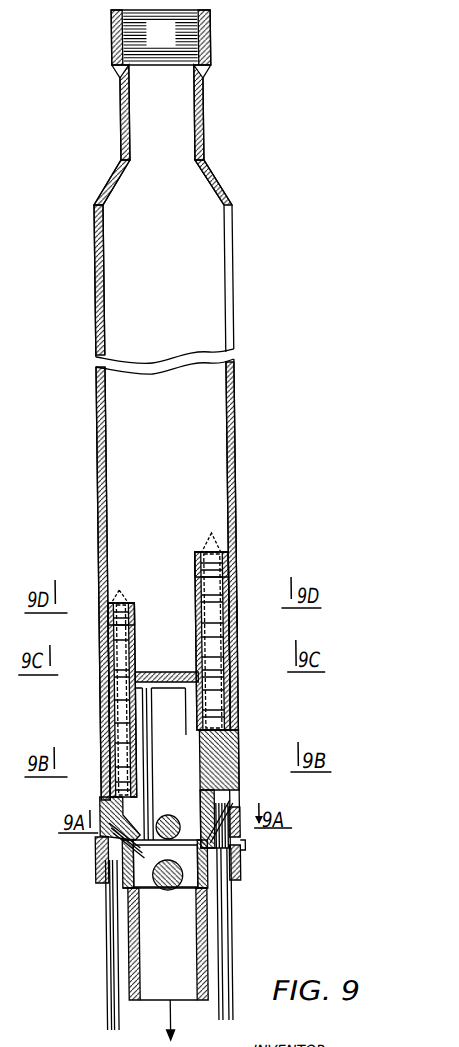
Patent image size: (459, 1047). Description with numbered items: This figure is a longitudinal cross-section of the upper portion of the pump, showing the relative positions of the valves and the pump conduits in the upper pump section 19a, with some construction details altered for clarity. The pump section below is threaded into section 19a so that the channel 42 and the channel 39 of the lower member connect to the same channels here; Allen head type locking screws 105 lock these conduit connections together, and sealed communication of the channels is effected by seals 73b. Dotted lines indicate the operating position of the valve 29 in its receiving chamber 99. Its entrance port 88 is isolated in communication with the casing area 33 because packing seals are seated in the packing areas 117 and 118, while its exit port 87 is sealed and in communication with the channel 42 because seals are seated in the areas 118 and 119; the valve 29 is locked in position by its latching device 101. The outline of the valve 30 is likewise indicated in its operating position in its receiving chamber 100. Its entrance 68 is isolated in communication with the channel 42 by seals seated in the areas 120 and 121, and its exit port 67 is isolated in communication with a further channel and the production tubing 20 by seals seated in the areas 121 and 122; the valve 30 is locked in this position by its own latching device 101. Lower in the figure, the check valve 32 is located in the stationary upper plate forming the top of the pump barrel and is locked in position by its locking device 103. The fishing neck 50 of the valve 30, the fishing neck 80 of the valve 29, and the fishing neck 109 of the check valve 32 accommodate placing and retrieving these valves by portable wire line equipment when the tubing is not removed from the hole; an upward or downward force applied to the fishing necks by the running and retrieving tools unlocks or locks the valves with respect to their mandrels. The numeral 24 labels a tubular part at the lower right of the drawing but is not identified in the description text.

The production tubing 20 is at (172, 47).
The section of pump 19a is at (262, 431).
The casing area 33 is at (292, 493).
The fishing neck 50 is at (204, 537).
The fishing neck 80 is at (114, 598).
The latching device 101 is at (196, 567).
The seal area 122 is at (215, 590).
The exit port 67 is at (191, 607).
The valve 30 is at (229, 613).
The seal area 119 is at (110, 643).
The seal area 121 is at (197, 638).
The channel 42 is at (160, 672).
The valve 29 is at (92, 670).
The receiving chamber 100 is at (221, 673).
The exit port 87 is at (108, 683).
The entrance 68 is at (187, 683).
The seal area 120 is at (212, 711).
The receiving chamber 99 is at (104, 712).
The packing area 118 is at (103, 737).
The entrance port 88 is at (104, 768).
The packing area 117 is at (104, 780).
The channel 39 is at (196, 773).
The fishing neck 109 is at (163, 816).
The locking screw 105 is at (229, 810).
The locking device 103 is at (193, 850).
The seal 73b is at (230, 850).
The check valve 32 is at (138, 887).
The tubing 24 is at (221, 943).